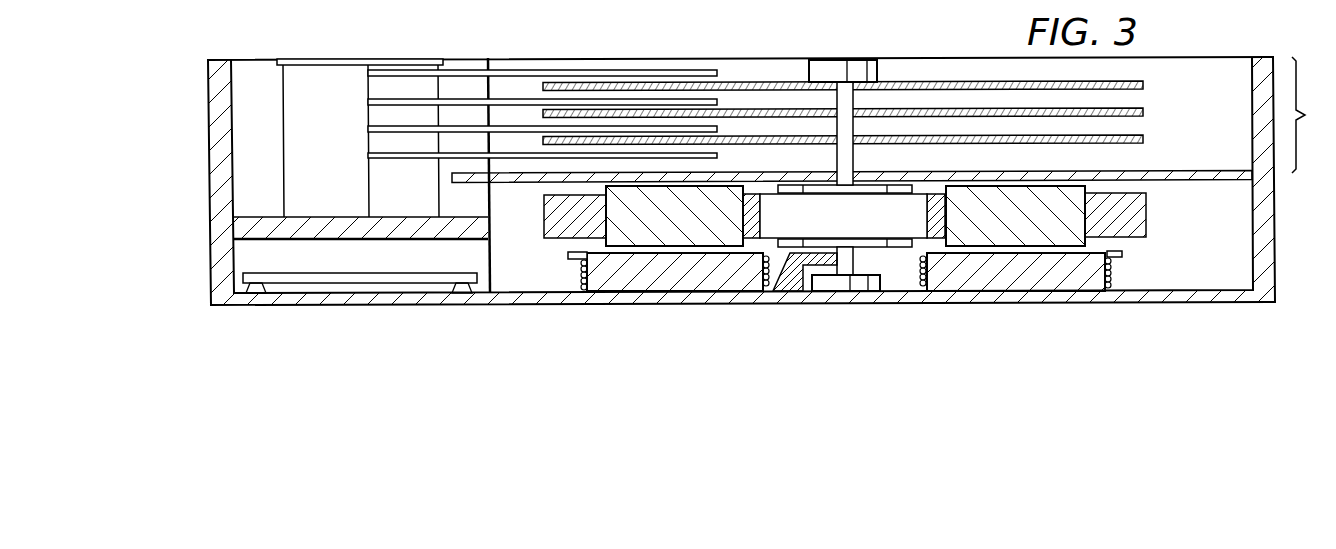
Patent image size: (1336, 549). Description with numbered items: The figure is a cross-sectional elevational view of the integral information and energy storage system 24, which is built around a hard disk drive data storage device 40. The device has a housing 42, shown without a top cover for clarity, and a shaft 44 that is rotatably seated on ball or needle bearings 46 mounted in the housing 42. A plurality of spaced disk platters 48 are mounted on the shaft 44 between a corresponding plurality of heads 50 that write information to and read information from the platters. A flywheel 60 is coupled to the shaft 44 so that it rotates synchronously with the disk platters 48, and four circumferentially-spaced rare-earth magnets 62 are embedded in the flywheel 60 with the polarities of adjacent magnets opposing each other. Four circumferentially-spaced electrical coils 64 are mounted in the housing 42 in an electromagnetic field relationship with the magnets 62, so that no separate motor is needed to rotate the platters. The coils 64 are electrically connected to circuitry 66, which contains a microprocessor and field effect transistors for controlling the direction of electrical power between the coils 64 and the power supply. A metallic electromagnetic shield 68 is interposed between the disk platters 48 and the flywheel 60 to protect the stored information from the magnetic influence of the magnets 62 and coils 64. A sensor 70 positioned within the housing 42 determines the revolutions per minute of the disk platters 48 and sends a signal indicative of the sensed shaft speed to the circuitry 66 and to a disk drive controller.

The integral information and energy storage system 24 is at (318, 46).
The hard disk drive data storage device 40 is at (1314, 115).
The housing 42 is at (209, 109).
The shaft 44 is at (852, 100).
The bearings 46 is at (823, 70).
The disk platters 48 is at (1144, 113).
The heads 50 is at (722, 90).
The flywheel 60 is at (543, 212).
The magnets 62 is at (590, 245).
The electrical coils 64 is at (572, 283).
The circuitry 66 is at (296, 293).
The electromagnetic shield 68 is at (1216, 181).
The sensor 70 is at (791, 292).